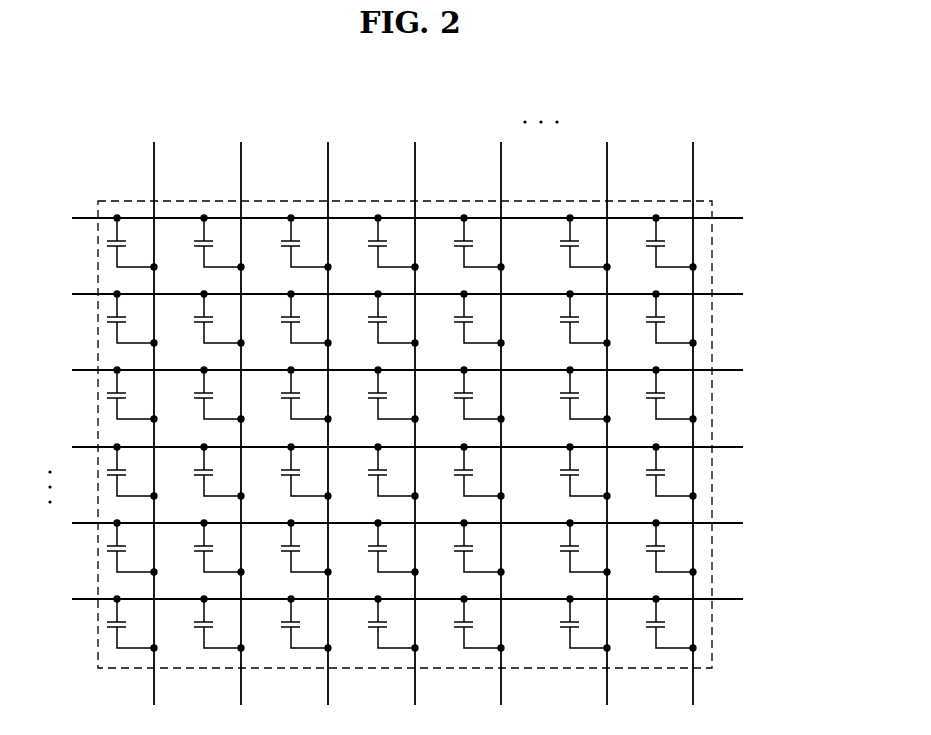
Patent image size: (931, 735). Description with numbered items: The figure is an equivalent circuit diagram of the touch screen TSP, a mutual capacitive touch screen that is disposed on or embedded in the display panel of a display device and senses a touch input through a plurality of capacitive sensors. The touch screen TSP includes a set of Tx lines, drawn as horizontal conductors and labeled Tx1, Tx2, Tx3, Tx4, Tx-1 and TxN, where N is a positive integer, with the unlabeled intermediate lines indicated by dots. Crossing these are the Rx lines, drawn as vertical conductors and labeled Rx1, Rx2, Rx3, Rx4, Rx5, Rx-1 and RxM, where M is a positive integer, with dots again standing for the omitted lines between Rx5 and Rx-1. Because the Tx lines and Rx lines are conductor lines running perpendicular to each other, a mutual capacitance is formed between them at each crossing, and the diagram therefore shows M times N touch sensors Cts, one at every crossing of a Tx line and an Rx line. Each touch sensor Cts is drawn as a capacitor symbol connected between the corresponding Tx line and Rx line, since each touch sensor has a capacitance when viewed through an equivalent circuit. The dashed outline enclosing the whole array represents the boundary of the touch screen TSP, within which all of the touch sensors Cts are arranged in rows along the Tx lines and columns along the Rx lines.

The touch sensors Cts is at (201, 242).
The touch screen TSP is at (712, 477).
The Rx line Rx1 is at (154, 407).
The Rx line Rx2 is at (241, 407).
The Rx line Rx3 is at (328, 407).
The Rx line Rx4 is at (415, 407).
The Rx line Rx5 is at (498, 407).
The Rx line Rx-1 is at (606, 407).
The Rx line RxM is at (693, 407).
The Tx line Tx1 is at (387, 218).
The Tx line Tx2 is at (387, 294).
The Tx line Tx3 is at (387, 370).
The Tx line Tx4 is at (387, 447).
The Tx line Tx-1 is at (382, 523).
The Tx line TxN is at (386, 599).